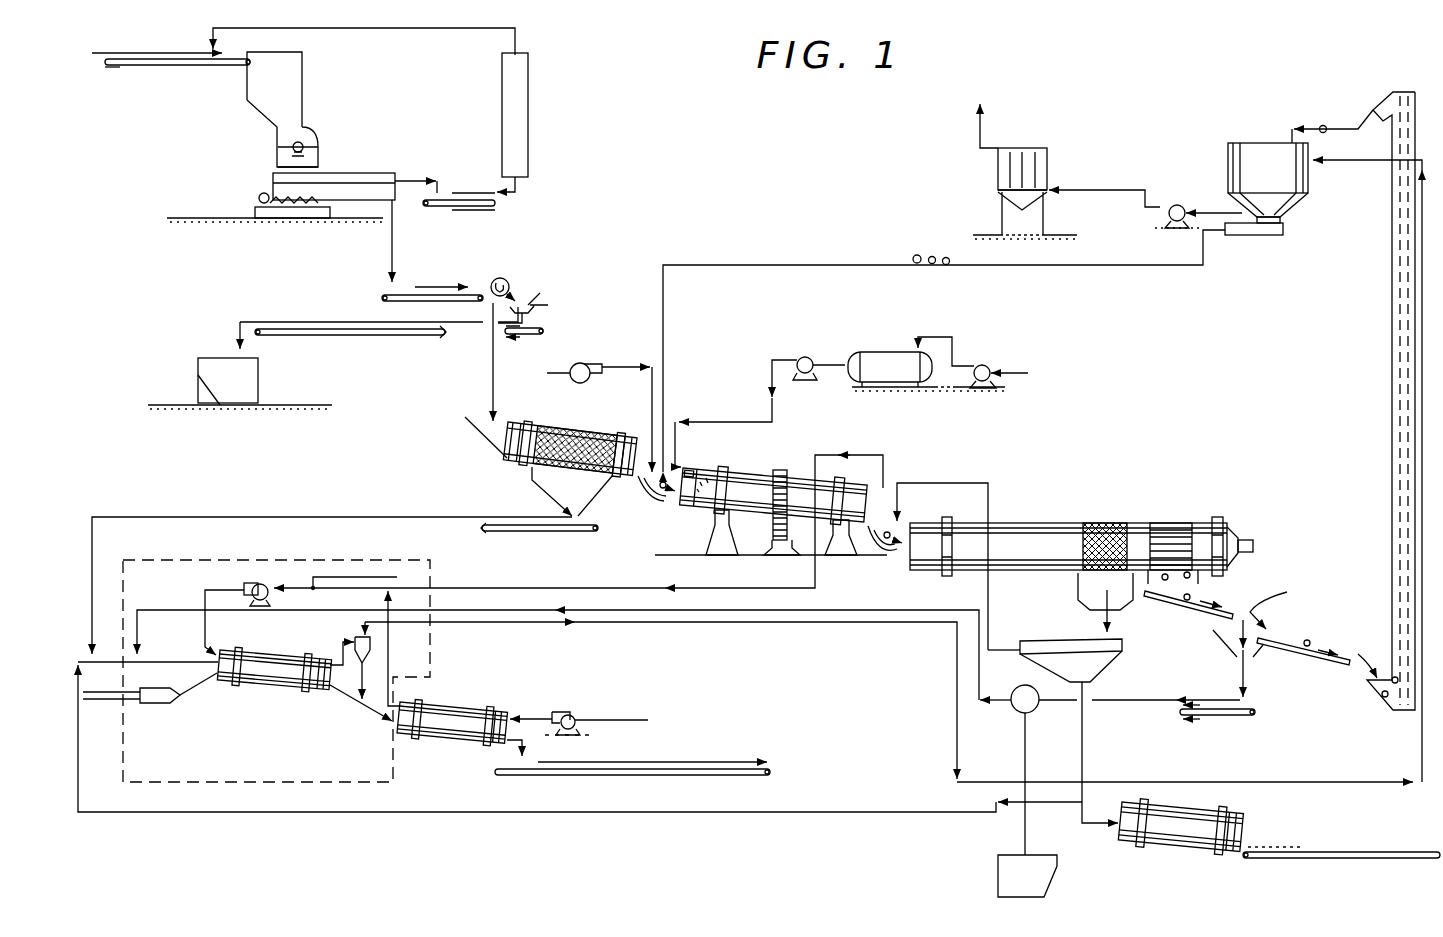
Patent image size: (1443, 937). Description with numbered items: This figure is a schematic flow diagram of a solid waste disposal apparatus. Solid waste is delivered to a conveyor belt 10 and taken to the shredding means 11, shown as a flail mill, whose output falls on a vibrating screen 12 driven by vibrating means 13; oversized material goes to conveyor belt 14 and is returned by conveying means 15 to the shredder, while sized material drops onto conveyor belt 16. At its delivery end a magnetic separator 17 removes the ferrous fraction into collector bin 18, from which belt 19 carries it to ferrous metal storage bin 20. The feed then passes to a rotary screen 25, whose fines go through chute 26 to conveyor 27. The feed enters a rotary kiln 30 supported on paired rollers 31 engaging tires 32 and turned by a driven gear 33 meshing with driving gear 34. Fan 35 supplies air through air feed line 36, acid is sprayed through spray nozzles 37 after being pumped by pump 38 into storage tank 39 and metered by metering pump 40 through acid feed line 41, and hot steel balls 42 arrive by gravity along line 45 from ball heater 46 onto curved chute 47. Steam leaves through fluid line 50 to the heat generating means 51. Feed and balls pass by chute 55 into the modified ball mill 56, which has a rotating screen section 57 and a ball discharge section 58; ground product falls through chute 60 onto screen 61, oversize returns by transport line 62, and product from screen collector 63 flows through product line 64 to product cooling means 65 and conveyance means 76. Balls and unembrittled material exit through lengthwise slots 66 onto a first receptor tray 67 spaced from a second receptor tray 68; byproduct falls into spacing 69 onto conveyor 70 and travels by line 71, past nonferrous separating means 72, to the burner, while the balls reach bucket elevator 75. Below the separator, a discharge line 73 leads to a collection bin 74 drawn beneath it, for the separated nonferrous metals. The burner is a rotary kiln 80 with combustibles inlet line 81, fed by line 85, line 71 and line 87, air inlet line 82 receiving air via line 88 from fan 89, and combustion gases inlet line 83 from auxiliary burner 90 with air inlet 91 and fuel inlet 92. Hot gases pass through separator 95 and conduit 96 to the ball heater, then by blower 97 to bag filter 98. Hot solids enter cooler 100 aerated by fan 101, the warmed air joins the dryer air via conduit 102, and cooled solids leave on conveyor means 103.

The conveyor belt 10 is at (168, 68).
The shredding means 11 is at (318, 118).
The vibrating screen 12 is at (378, 173).
The means to vibrate 13 is at (290, 218).
The conveyor belt 14 is at (456, 208).
The conveying means 15 is at (528, 148).
The conveyor belt 16 is at (385, 292).
The magnetic separator 17 is at (509, 281).
The collector bin 18 is at (408, 320).
The belt 19 is at (362, 337).
The ferrous metal storage bin 20 is at (198, 372).
The rotary screen 25 is at (575, 438).
The chute 26 is at (548, 488).
The conveyor 27 is at (545, 532).
The rotary kiln 30 is at (736, 466).
The paired rollers 31 is at (706, 534).
The tires 32 is at (724, 462).
The driven gear 33 is at (784, 468).
The driving gear 34 is at (786, 556).
The fan 35 is at (587, 363).
The air feed line 36 is at (640, 367).
The spray nozzles 37 is at (702, 472).
The pump 38 is at (988, 364).
The storage tank 39 is at (887, 358).
The metering pump 40 is at (814, 357).
The acid feed line 41 is at (732, 422).
The steel balls 42 is at (916, 256).
The line 45 is at (752, 268).
The ball heater 46 is at (1258, 160).
The curved chute 47 is at (640, 495).
The fluid line 50 is at (883, 468).
The heat generating means 51 is at (220, 560).
The chute 55 is at (890, 550).
The modified ball mill 56 is at (1058, 530).
The rotating screen section 57 is at (1105, 522).
The rotating ball discharge section 58 is at (1160, 522).
The chute 60 is at (1076, 590).
The screen 61 is at (1128, 648).
The transport line 62 is at (988, 503).
The screen collector 63 is at (1090, 668).
The product line 64 is at (1085, 740).
The product cooling means 65 is at (1182, 848).
The lengthwise slots 66 is at (1195, 522).
The first receptor tray 67 is at (1200, 613).
The second receptor tray 68 is at (1290, 658).
The spacing 69 is at (1260, 631).
The conveyor 70 is at (1213, 718).
The line 71 is at (678, 618).
The nonferrous separating means 72 is at (1020, 686).
The line 73 is at (1024, 748).
The tank 74 is at (998, 872).
The bucket elevator 75 is at (1392, 490).
The conveyance means 76 is at (1368, 848).
The rotary kiln 80 is at (270, 690).
The combustibles inlet line 81 is at (185, 660).
The air inlet line 82 is at (208, 628).
The combustion gases inlet line 83 is at (197, 692).
The line 85 is at (334, 517).
The line 87 is at (506, 812).
The line 88 is at (370, 577).
The fan 89 is at (268, 586).
The auxiliary burner 90 is at (155, 704).
The air inlet 91 is at (112, 690).
The fuel inlet 92 is at (112, 702).
The separator 95 is at (356, 636).
The conduit 96 is at (1348, 162).
The blower 97 is at (1170, 205).
The bag filter 98 is at (1047, 163).
The cooler 100 is at (442, 742).
The fan 101 is at (575, 716).
The conduit 102 is at (392, 670).
The conveyor means 103 is at (648, 780).